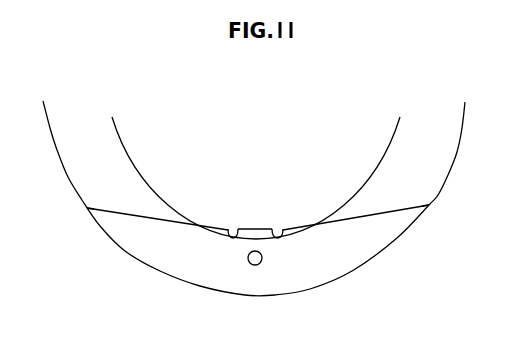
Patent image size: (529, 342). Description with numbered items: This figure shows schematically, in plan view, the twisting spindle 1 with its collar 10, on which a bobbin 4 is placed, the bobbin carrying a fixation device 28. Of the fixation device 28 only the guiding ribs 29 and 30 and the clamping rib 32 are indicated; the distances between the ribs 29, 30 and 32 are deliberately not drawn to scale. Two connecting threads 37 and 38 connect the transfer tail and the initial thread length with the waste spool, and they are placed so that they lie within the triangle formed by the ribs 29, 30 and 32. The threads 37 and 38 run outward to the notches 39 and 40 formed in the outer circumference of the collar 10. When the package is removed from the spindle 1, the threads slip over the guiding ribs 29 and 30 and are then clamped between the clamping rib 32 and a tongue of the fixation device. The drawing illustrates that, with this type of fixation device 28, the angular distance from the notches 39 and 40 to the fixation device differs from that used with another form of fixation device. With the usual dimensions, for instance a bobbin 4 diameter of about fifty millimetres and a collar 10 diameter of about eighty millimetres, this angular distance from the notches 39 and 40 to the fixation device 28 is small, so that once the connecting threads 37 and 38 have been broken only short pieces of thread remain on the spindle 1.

The twisting spindle 1 is at (374, 116).
The bobbin 4 is at (205, 155).
The collar 10 is at (160, 256).
The fixation device 28 is at (294, 241).
The guiding rib 29 is at (275, 228).
The guiding rib 30 is at (237, 228).
The clamping rib 32 is at (257, 263).
The connecting thread 37 is at (116, 211).
The connecting thread 38 is at (356, 219).
The notch 39 is at (429, 205).
The notch 40 is at (87, 208).